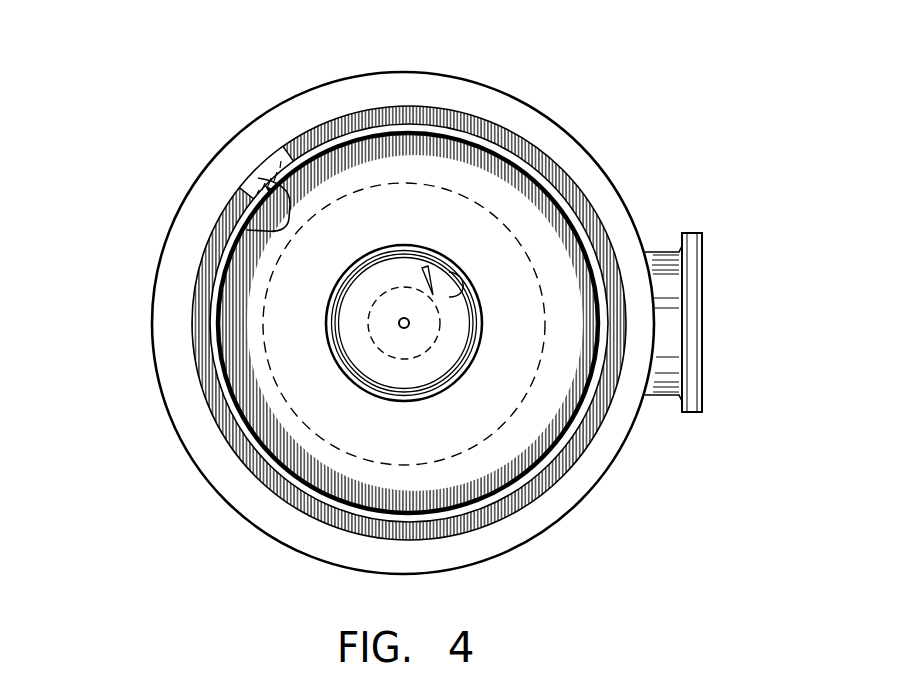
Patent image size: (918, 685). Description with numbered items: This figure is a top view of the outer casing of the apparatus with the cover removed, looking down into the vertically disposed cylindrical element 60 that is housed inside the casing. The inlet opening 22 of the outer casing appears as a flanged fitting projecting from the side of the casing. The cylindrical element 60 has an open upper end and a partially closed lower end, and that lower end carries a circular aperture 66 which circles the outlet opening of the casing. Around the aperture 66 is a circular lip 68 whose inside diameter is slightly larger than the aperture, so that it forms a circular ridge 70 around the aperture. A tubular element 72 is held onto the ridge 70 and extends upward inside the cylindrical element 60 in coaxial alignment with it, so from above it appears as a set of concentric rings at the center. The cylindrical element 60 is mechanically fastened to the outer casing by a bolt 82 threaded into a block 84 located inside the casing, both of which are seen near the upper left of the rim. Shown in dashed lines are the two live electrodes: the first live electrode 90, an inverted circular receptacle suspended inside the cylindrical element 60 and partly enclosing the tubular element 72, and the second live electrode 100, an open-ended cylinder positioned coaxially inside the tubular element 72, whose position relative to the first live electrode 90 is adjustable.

The inlet opening 22 is at (703, 343).
The cylindrical element 60 is at (376, 130).
The circular aperture 66 is at (424, 268).
The circular lip 68 is at (426, 263).
The circular ridge 70 is at (450, 275).
The tubular element 72 is at (327, 303).
The bolt 82 is at (282, 224).
The block 84 is at (292, 133).
The first live electrode 90 is at (278, 393).
The second live electrode 100 is at (370, 338).